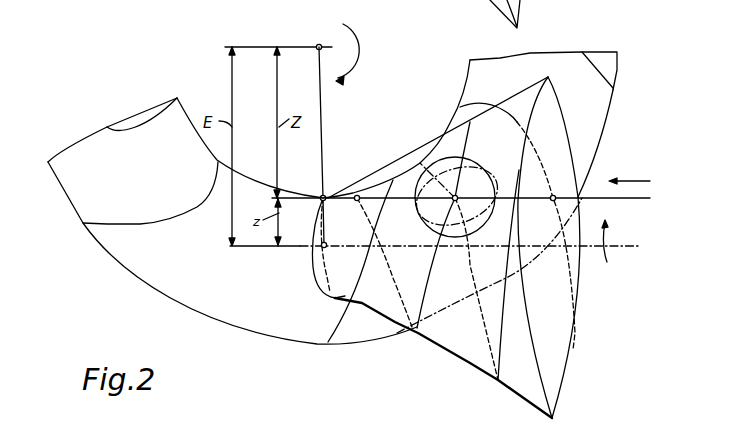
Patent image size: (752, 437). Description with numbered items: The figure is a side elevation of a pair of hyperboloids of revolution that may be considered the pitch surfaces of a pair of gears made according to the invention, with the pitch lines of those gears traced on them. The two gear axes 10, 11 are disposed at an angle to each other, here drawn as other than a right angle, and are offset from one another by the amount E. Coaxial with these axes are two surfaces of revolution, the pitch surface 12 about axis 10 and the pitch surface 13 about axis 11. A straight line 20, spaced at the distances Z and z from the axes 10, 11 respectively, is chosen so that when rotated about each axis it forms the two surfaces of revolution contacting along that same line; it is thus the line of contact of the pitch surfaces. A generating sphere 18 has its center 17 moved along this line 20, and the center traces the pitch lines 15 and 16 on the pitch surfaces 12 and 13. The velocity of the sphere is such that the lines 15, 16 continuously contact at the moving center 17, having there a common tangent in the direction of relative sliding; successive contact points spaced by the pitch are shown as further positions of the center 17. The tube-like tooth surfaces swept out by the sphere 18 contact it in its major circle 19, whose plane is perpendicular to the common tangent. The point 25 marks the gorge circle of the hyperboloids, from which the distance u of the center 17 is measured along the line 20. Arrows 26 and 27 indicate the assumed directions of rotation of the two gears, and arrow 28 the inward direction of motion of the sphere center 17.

The axis 10 is at (320, 44).
The axis 11 is at (636, 245).
The pitch surface 12 is at (609, 108).
The pitch surface 13 is at (505, 386).
The pitch line 15 is at (148, 223).
The pitch line 16 is at (428, 300).
The sphere center 17 is at (458, 197).
The sphere 18 is at (452, 153).
The major circle 19 is at (463, 172).
The line 20 is at (578, 197).
The point 25 is at (327, 197).
The arrow 26 is at (359, 46).
The arrow 27 is at (607, 257).
The arrow 28 is at (647, 181).